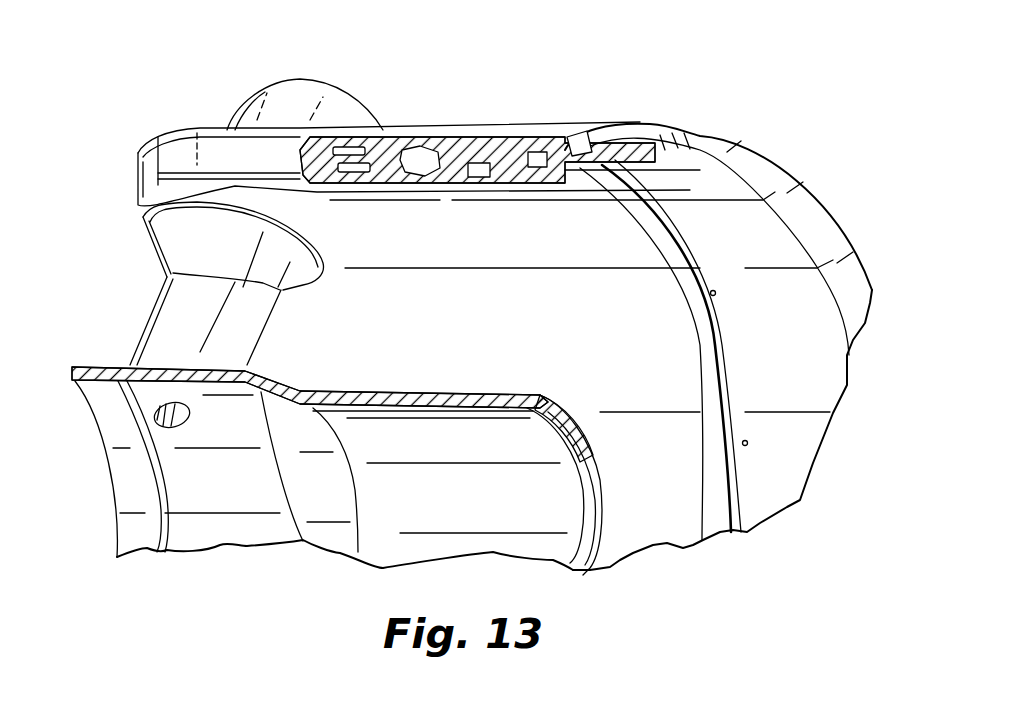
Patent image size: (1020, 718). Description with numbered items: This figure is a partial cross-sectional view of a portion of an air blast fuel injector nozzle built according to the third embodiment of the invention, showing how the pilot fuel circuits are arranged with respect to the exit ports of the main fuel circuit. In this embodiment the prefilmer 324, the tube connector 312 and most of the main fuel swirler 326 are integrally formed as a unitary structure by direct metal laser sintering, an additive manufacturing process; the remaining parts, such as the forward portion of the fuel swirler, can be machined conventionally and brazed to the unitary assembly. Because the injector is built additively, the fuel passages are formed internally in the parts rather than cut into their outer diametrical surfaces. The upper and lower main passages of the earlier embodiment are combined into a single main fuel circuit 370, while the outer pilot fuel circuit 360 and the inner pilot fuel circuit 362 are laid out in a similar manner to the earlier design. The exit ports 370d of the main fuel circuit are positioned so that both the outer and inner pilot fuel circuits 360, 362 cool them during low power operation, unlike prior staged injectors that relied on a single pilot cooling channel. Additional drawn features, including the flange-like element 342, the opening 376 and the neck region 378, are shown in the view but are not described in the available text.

The tube connector 312 is at (252, 100).
The prefilmer 324 is at (477, 125).
The main fuel swirler 326 is at (410, 192).
The flange 342 is at (100, 367).
The outer pilot fuel circuit 360 is at (343, 150).
The inner pilot fuel circuit 362 is at (347, 158).
The main fuel circuit 370 is at (417, 168).
The exit ports 370d is at (711, 295).
The hole 376 is at (172, 428).
The neck 378 is at (172, 256).